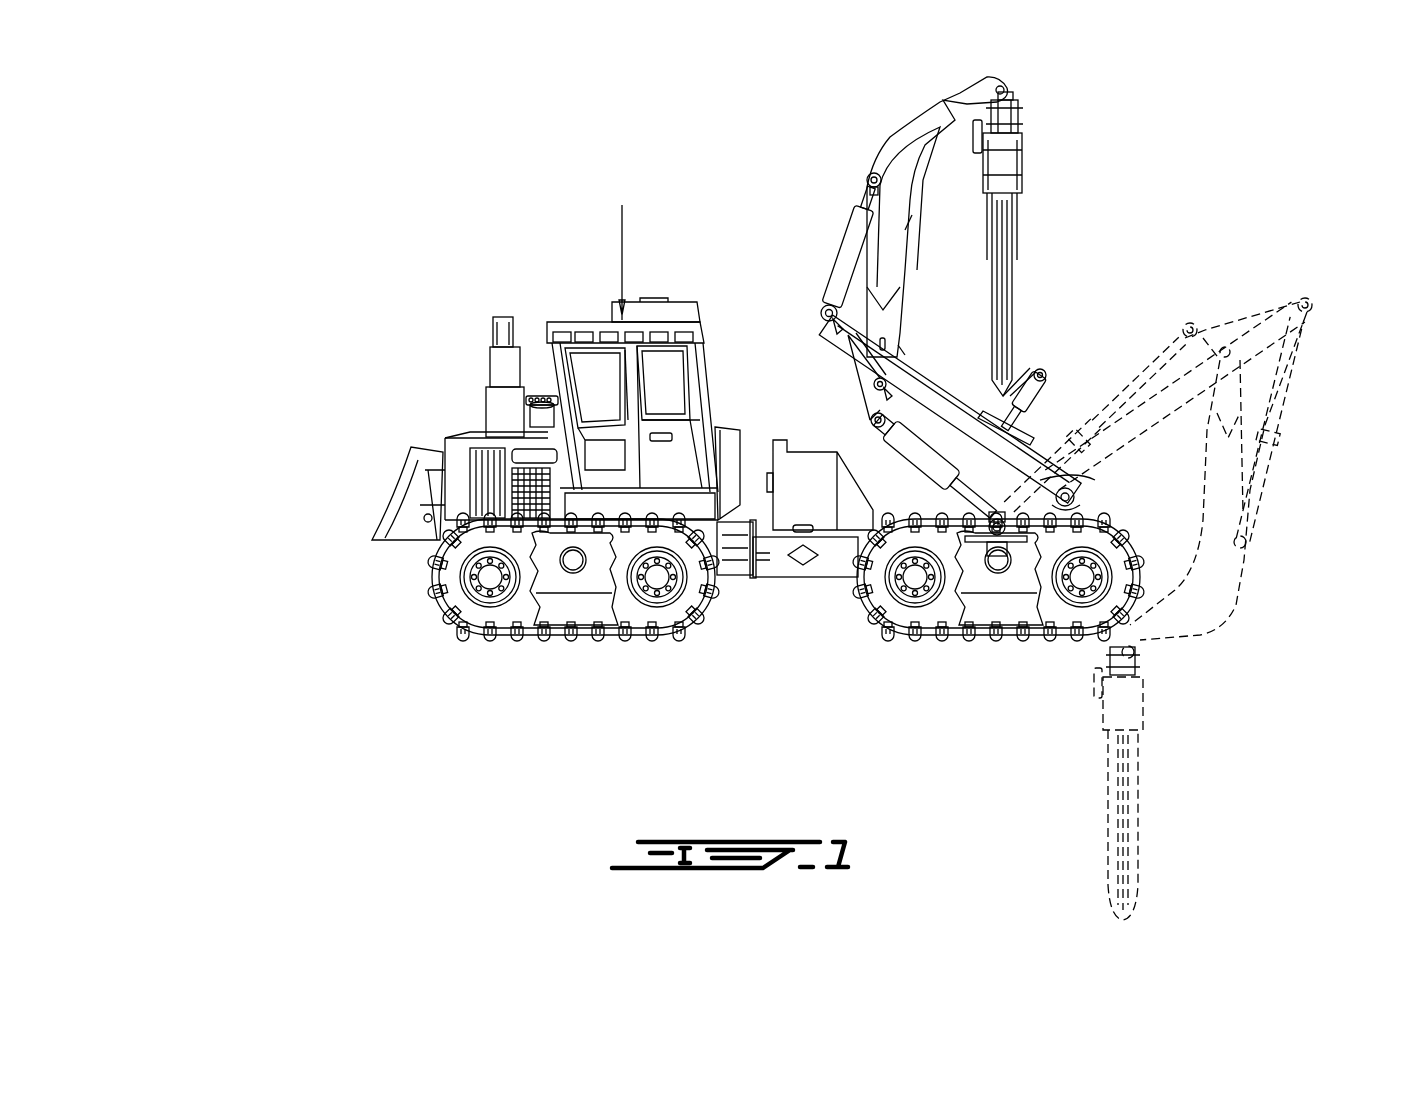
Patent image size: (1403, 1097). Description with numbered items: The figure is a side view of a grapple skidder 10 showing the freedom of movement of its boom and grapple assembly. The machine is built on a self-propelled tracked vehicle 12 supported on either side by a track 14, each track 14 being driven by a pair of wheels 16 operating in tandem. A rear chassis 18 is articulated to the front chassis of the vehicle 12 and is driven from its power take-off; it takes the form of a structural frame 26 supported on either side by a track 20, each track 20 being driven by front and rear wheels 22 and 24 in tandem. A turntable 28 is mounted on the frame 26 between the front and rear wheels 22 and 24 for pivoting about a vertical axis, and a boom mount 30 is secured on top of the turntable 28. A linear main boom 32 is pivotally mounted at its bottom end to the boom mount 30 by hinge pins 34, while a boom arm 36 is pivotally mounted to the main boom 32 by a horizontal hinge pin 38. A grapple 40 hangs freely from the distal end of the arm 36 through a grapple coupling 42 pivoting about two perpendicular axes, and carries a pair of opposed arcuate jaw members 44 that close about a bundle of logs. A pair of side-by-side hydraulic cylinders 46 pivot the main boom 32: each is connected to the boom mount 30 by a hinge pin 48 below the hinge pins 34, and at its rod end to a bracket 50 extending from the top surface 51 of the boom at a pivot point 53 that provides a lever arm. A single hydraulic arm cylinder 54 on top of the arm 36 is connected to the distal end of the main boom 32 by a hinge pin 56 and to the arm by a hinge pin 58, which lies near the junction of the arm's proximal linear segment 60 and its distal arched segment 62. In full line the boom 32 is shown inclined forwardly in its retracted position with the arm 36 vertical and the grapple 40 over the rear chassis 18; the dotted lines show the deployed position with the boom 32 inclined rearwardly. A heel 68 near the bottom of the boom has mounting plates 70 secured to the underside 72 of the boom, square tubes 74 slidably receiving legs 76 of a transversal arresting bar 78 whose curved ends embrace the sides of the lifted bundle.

The grapple skidder 10 is at (402, 253).
The self-propelled tracked vehicle 12 is at (670, 288).
The track 14 is at (548, 636).
The wheels 16 is at (488, 580).
The rear chassis 18 is at (885, 650).
The track 20 is at (1022, 640).
The front wheels 22 is at (843, 580).
The rear wheels 24 is at (1070, 612).
The structural frame 26 is at (760, 590).
The turntable 28 is at (985, 567).
The boom mount 30 is at (1088, 472).
The main boom 32 is at (921, 392).
The hinge pins 34 is at (1078, 499).
The boom arm 36 is at (887, 138).
The hinge pin 38 is at (877, 383).
The grapple 40 is at (1030, 195).
The grapple coupling 42 is at (1035, 103).
The arcuate jaw members 44 is at (992, 236).
The hydraulic cylinders 46 is at (915, 466).
The hinge pin 48 is at (1000, 515).
The bracket 50 is at (862, 398).
The top surface 51 is at (965, 492).
The pivot point 53 is at (877, 423).
The hydraulic arm cylinder 54 is at (843, 256).
The hinge pin 56 is at (826, 313).
The hinge pin 58 is at (866, 182).
The proximal linear segment 60 is at (890, 240).
The distal arched segment 62 is at (920, 116).
The heel 68 is at (1040, 352).
The mounting plates 70 is at (1028, 428).
The underside 72 is at (915, 358).
The square tube 74 is at (1010, 405).
The legs 76 is at (1020, 340).
The arresting bar 78 is at (1050, 378).